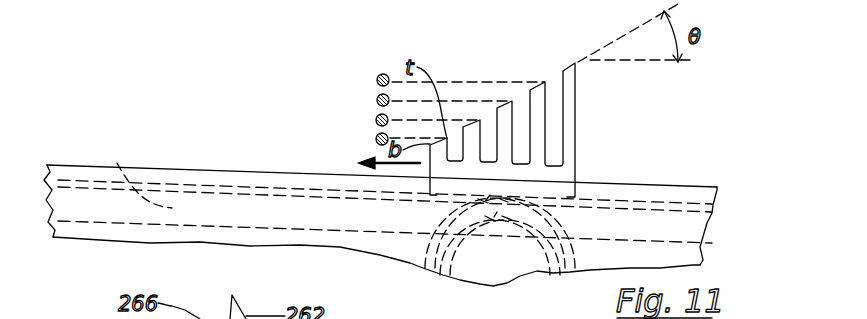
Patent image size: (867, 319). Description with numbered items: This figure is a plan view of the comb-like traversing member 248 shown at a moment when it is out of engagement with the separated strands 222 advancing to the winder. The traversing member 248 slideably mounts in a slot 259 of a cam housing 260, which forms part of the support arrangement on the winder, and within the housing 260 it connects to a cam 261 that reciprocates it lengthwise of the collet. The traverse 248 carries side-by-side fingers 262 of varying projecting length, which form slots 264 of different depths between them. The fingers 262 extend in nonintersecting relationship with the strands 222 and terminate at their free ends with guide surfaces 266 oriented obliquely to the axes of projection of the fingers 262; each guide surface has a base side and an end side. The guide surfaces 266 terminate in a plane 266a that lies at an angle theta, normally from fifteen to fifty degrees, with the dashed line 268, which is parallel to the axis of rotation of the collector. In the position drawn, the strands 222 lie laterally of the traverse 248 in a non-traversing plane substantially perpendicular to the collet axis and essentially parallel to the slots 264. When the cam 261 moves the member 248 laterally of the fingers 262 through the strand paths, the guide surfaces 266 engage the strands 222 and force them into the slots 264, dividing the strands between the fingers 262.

The strands 222 is at (378, 118).
The traversing member 248 is at (580, 160).
The slot 259 is at (263, 172).
The cam housing 260 is at (187, 168).
The cam 261 is at (117, 162).
The fingers 262 is at (537, 104).
The slots 264 is at (518, 127).
The guide surfaces 266 is at (513, 103).
The plane 266a is at (637, 27).
The dashed line 268 is at (690, 61).